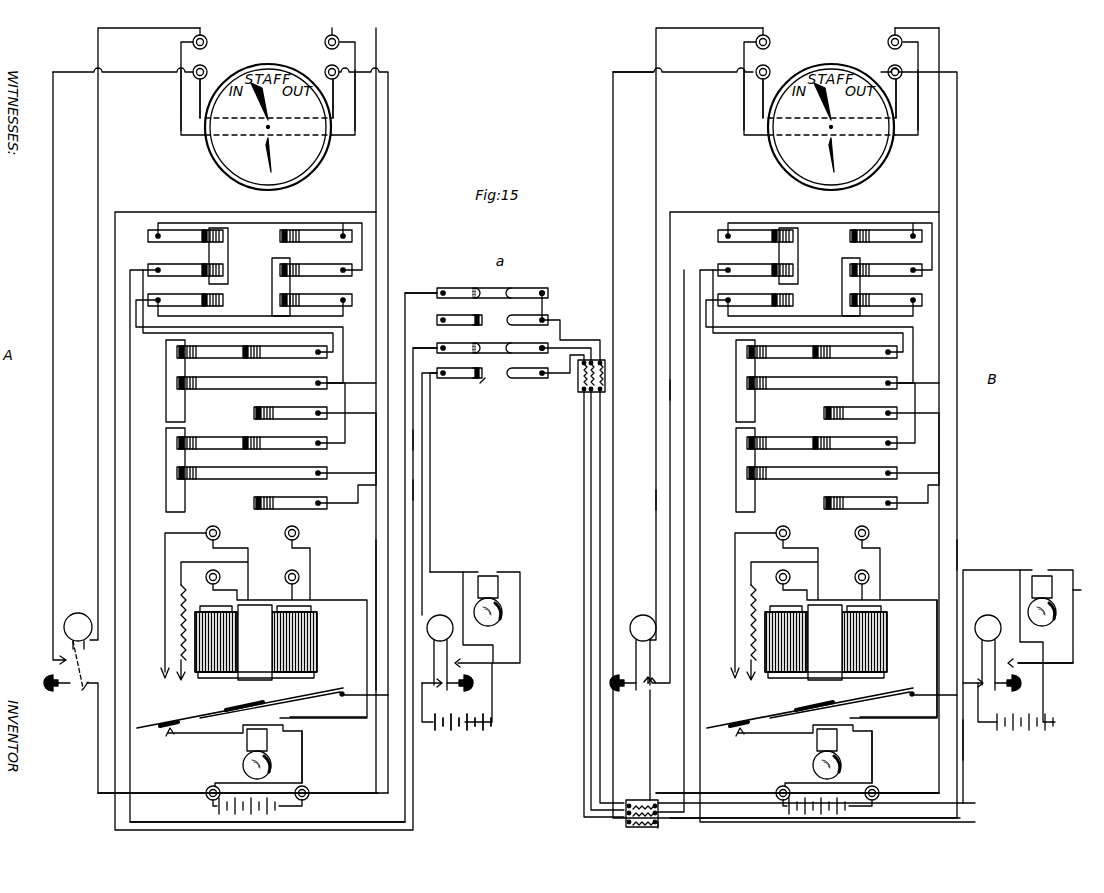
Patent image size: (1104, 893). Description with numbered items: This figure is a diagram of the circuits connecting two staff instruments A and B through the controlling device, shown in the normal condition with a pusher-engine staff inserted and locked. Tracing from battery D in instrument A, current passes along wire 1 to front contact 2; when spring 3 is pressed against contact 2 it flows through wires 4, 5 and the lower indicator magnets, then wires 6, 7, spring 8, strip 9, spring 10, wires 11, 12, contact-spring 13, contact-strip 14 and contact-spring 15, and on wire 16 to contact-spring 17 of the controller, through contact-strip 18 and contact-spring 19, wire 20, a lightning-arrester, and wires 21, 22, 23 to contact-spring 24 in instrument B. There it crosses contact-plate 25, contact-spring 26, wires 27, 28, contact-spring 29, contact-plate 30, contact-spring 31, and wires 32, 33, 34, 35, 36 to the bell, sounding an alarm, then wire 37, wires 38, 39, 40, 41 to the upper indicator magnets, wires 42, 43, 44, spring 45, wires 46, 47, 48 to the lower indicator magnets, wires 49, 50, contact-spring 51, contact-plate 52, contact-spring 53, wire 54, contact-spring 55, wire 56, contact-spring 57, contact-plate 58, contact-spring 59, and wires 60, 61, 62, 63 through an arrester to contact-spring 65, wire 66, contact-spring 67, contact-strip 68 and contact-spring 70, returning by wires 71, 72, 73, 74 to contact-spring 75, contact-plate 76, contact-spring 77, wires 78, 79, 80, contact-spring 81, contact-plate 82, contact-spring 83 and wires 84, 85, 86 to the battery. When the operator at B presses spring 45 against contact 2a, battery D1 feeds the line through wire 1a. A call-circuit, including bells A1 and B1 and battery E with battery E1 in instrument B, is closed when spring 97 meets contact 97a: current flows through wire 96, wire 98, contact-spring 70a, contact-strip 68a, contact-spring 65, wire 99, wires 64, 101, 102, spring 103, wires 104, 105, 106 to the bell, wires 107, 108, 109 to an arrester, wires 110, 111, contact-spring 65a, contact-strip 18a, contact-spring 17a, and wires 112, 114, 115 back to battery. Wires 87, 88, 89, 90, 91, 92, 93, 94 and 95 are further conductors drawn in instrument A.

The wire 1 is at (238, 800).
The wire 1a is at (732, 794).
The front contact 2 is at (86, 692).
The front contact 2a is at (650, 690).
The spring 3 is at (52, 652).
The wire 4 is at (156, 8).
The wire 5 is at (180, 97).
The wire 6 is at (360, 113).
The wire 7 is at (376, 170).
The spring 8 is at (225, 390).
The strip 9 is at (166, 374).
The spring 10 is at (227, 352).
The wire 11 is at (286, 335).
The wire 12 is at (232, 317).
The contact-spring 13 is at (316, 299).
The contact-strip 14 is at (272, 284).
The contact-spring 15 is at (316, 269).
The wire 16 is at (297, 213).
The contact-spring 17 is at (448, 346).
The contact-spring 17a is at (452, 484).
The contact-strip 18 is at (489, 340).
The contact-strip 18a is at (484, 381).
The contact-spring 19 is at (528, 347).
The wire 20 is at (574, 345).
The wire 21 is at (591, 493).
The wire 22 is at (669, 828).
The wire 23 is at (684, 553).
The contact-spring 24 is at (755, 269).
The contact-plate 25 is at (798, 250).
The contact-spring 26 is at (755, 235).
The wire 27 is at (702, 276).
The wire 28 is at (915, 352).
The contact-spring 29 is at (831, 416).
The contact-plate 30 is at (736, 462).
The contact-spring 31 is at (797, 476).
The wire 32 is at (944, 483).
The wire 33 is at (948, 695).
The wire 34 is at (888, 774).
The wire 35 is at (872, 715).
The wire 36 is at (845, 712).
The wire 37 is at (804, 743).
The wire 38 is at (806, 683).
The wire 39 is at (957, 545).
The wire 40 is at (925, 72).
The wire 41 is at (897, 87).
The wire 42 is at (763, 109).
The wire 43 is at (684, 74).
The wire 44 is at (613, 205).
The spring 45 is at (643, 615).
The wire 46 is at (657, 503).
The wire 47 is at (693, 28).
The wire 48 is at (743, 118).
The wire 49 is at (919, 110).
The wire 50 is at (939, 185).
The contact-spring 51 is at (822, 382).
The contact-plate 52 is at (736, 367).
The contact-spring 53 is at (822, 351).
The wire 54 is at (784, 329).
The contact-spring 55 is at (755, 299).
The wire 56 is at (797, 318).
The contact-spring 57 is at (886, 299).
The contact-plate 58 is at (842, 282).
The contact-spring 59 is at (886, 269).
The wire 60 is at (932, 252).
The wire 61 is at (796, 215).
The wire 62 is at (670, 380).
The wire 63 is at (653, 792).
The wire 64 is at (600, 555).
The contact-spring 65 is at (527, 312).
The contact-spring 65a is at (545, 365).
The wire 66 is at (550, 306).
The contact-spring 67 is at (524, 292).
The contact-strip 68 is at (488, 285).
The contact-strip 68a is at (482, 322).
The contact-spring 70 is at (445, 290).
The contact-spring 70a is at (459, 312).
The wire 71 is at (400, 289).
The wire 72 is at (413, 446).
The wire 73 is at (326, 821).
The wire 74 is at (130, 765).
The contact-spring 75 is at (185, 269).
The contact-plate 76 is at (228, 247).
The contact-spring 77 is at (185, 235).
The wire 78 is at (183, 292).
The wire 79 is at (162, 336).
The wire 80 is at (346, 343).
The contact-spring 81 is at (261, 416).
The contact-plate 82 is at (166, 462).
The contact-spring 83 is at (276, 472).
The wire 84 is at (327, 487).
The wire 85 is at (376, 556).
The wire 86 is at (362, 791).
The conductor 87 is at (302, 742).
The conductor 88 is at (280, 715).
The contact 89 is at (234, 751).
The lever 90 is at (278, 702).
The conductor 91 is at (388, 82).
The indicator connection 92 is at (334, 87).
The indicator connection 93 is at (200, 100).
The conductor 94 is at (144, 84).
The conductor 95 is at (56, 291).
The wire 96 is at (457, 696).
The spring 97 is at (434, 657).
The front contact 97a is at (431, 677).
The wire 98 is at (413, 498).
The wire 99 is at (600, 326).
The wire 101 is at (738, 806).
The wire 102 is at (968, 770).
The spring 103 is at (990, 615).
The wire 104 is at (1052, 665).
The wire 105 is at (1088, 593).
The wire 106 is at (1056, 570).
The wire 107 is at (988, 568).
The wire 108 is at (975, 803).
The wire 109 is at (804, 821).
The wire 110 is at (584, 437).
The wire 111 is at (583, 375).
The wire 112 is at (433, 413).
The wire 114 is at (463, 565).
The wire 115 is at (463, 598).
The bell A1 is at (502, 612).
The bell B1 is at (1048, 610).
The battery D is at (257, 767).
The battery D1 is at (827, 767).
The local battery E is at (463, 736).
The battery E1 is at (1016, 711).